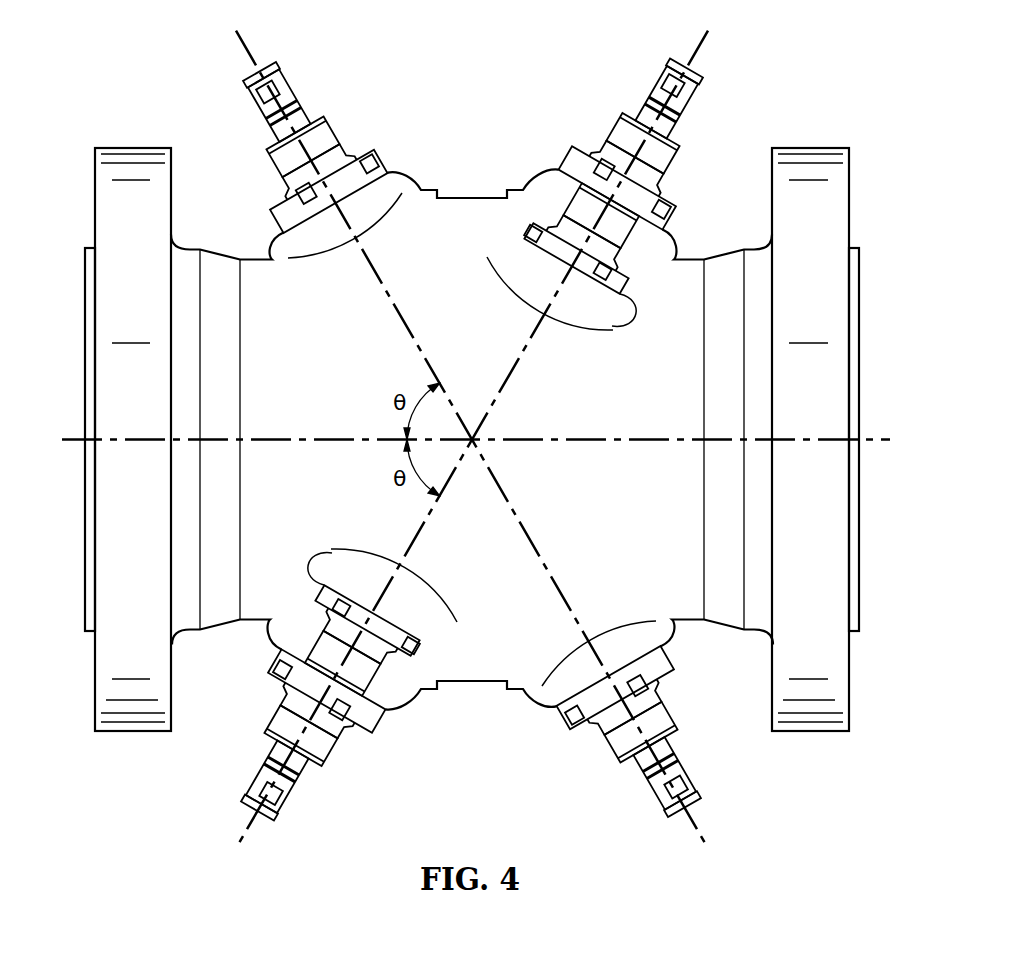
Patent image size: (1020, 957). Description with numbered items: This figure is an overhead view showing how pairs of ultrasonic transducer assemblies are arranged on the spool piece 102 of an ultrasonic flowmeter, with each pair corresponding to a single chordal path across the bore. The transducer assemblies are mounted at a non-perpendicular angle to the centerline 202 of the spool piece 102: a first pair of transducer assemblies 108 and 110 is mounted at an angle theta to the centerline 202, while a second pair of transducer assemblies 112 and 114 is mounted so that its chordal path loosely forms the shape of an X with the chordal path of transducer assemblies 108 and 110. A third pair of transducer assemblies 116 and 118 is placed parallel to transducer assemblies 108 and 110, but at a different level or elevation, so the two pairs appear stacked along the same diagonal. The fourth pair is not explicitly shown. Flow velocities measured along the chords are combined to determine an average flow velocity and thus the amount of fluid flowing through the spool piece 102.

The spool piece 102 is at (470, 196).
The transducer assembly 108 is at (318, 585).
The transducer assembly 110 is at (623, 293).
The transducer assembly 112 is at (610, 746).
The transducer assembly 114 is at (336, 131).
The transducer assembly 116 is at (296, 796).
The transducer assembly 118 is at (652, 82).
The centerline 202 is at (598, 441).